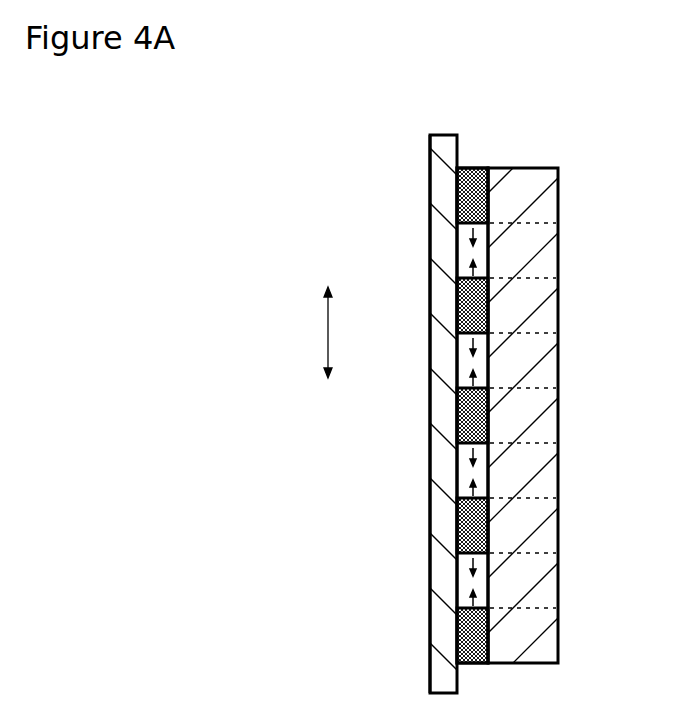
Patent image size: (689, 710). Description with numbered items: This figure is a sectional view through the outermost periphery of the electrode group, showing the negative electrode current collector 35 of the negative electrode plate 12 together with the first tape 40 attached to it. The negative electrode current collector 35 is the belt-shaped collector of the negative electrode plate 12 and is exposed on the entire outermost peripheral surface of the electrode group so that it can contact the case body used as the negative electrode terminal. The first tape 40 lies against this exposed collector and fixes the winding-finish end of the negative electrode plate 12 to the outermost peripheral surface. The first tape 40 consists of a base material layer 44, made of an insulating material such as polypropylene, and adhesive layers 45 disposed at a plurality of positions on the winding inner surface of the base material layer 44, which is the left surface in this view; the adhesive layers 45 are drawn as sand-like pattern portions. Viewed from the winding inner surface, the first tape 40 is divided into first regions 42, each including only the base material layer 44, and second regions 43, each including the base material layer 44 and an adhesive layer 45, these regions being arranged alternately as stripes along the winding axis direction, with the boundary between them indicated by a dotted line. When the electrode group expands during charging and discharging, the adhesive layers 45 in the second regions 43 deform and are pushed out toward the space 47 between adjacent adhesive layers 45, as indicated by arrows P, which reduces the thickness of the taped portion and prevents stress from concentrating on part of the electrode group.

The negative electrode plate 12 is at (423, 210).
The negative electrode current collector 35 is at (407, 422).
The first tape 40 is at (497, 410).
The first regions 42 is at (533, 270).
The second regions 43 is at (558, 410).
The base material layer 44 is at (533, 306).
The adhesive layers 45 is at (477, 167).
The space 47 is at (490, 240).
The arrows P is at (463, 233).